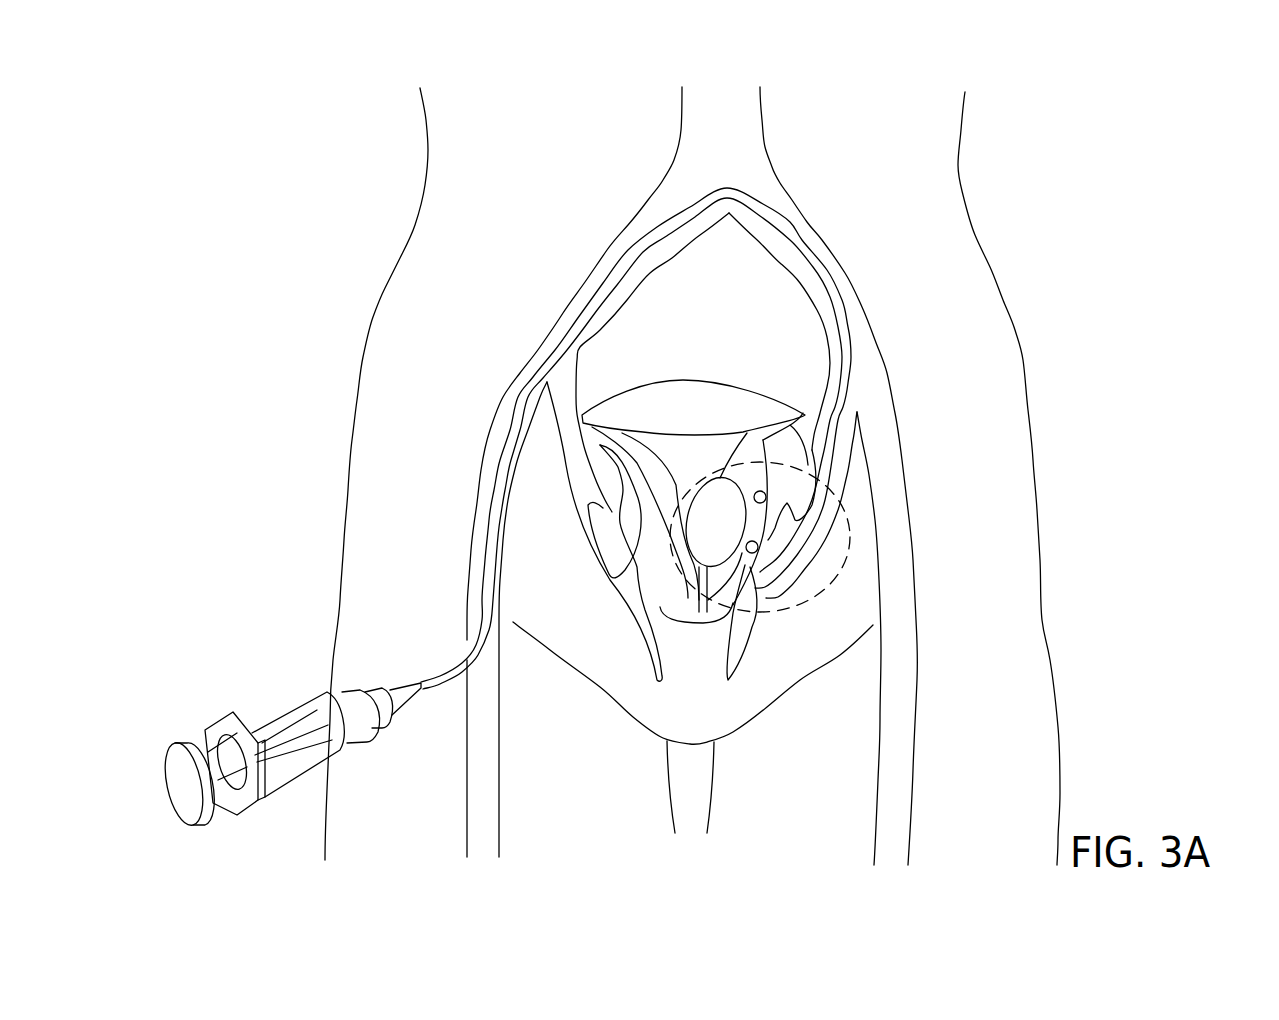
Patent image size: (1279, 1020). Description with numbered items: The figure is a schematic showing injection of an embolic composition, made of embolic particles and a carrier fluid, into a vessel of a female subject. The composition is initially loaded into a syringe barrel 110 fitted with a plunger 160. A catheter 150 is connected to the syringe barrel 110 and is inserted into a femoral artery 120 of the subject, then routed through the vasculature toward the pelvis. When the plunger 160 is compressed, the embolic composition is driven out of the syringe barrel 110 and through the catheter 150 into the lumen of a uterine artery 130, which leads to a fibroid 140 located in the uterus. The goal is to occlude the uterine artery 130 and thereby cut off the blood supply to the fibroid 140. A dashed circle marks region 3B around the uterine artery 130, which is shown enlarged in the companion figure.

The syringe barrel 110 is at (298, 777).
The femoral artery 120 is at (467, 617).
The uterine artery 130 is at (772, 588).
The fibroid 140 is at (702, 480).
The catheter 150 is at (502, 437).
The plunger 160 is at (167, 784).
The region 3B is at (850, 531).